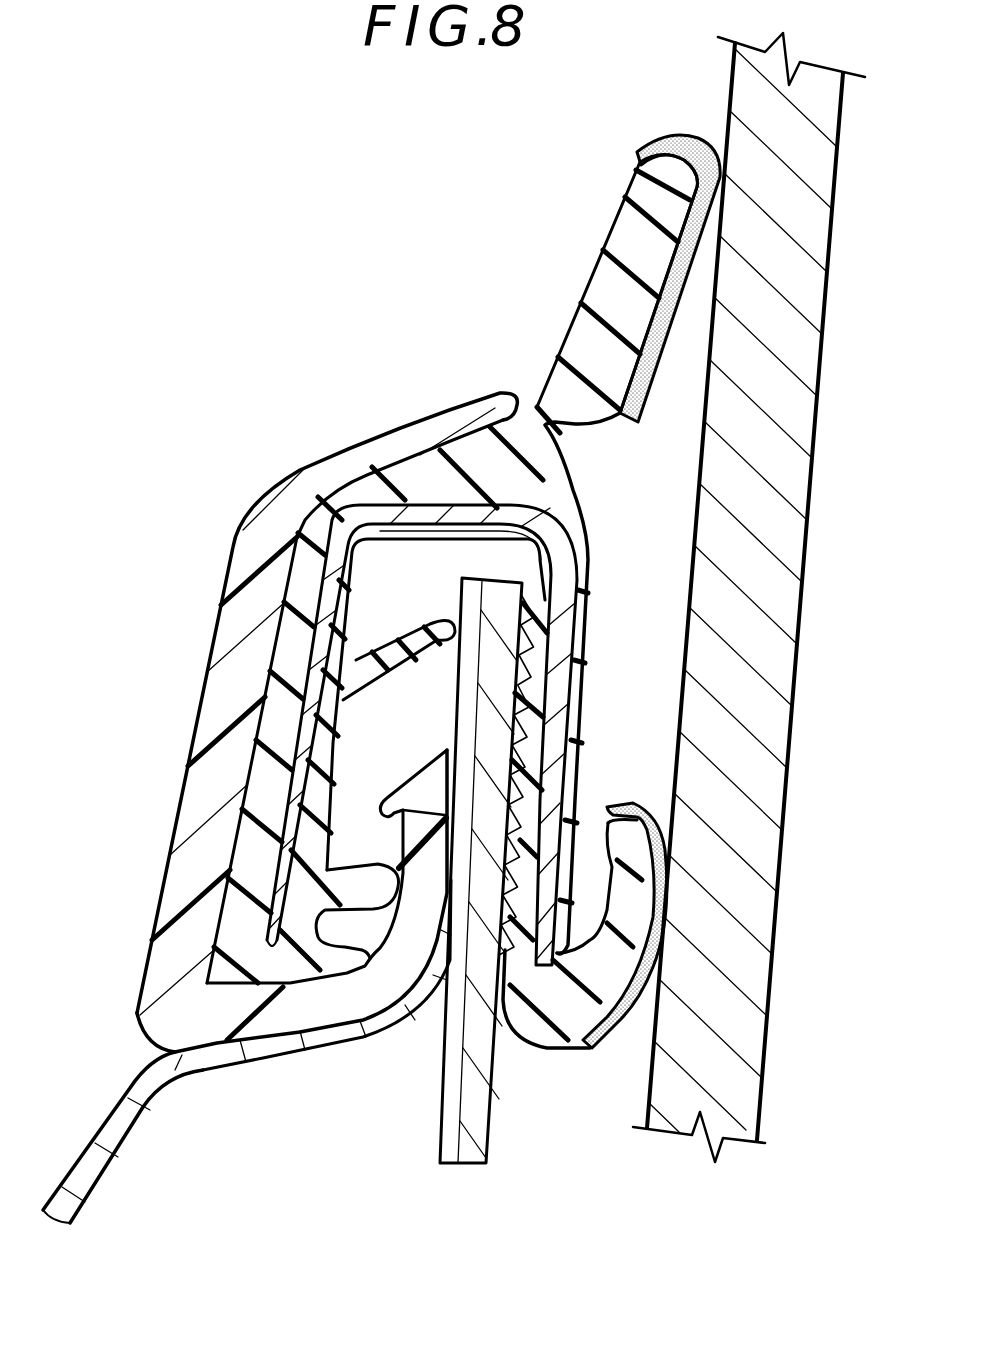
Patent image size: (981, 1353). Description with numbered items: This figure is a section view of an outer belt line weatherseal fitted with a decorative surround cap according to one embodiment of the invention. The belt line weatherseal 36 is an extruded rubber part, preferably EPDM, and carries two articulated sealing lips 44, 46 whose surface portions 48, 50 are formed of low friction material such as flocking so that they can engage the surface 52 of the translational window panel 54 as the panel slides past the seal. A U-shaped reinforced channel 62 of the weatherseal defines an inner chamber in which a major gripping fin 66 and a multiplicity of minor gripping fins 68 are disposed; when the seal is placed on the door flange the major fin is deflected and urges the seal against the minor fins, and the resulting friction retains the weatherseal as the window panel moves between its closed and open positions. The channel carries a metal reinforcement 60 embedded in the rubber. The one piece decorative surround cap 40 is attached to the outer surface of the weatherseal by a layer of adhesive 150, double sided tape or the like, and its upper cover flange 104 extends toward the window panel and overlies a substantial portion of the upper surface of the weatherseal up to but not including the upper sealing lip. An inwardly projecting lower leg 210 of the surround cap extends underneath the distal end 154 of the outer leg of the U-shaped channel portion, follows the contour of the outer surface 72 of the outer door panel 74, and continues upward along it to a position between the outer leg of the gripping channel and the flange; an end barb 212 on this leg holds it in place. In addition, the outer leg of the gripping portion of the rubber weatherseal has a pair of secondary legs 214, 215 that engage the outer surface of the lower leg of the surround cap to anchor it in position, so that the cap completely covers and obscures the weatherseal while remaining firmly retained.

The belt line weatherseal 36 is at (605, 488).
The decorative surround cap 40 is at (358, 716).
The upper sealing lip 44 is at (632, 230).
The lower sealing lip 46 is at (618, 797).
The low friction surface portion 48 is at (670, 140).
The low friction surface portion 50 is at (605, 1040).
The surface of window panel 52 is at (700, 487).
The translational window panel 54 is at (793, 477).
The metal carrier channel 60 is at (573, 593).
The U-shaped reinforced channel 62 is at (428, 746).
The major gripping fin 66 is at (400, 660).
The minor gripping fins 68 is at (520, 1030).
The outer surface of outer door panel 72 is at (103, 1117).
The outer door panel 74 is at (97, 1170).
The upper cover flange 104 is at (432, 422).
The layer of adhesive 150 is at (270, 627).
The distal end of outer leg 154 is at (233, 980).
The lower leg 210 is at (303, 1037).
The end barb 212 is at (390, 808).
The secondary leg 214 is at (360, 872).
The secondary leg 215 is at (340, 950).